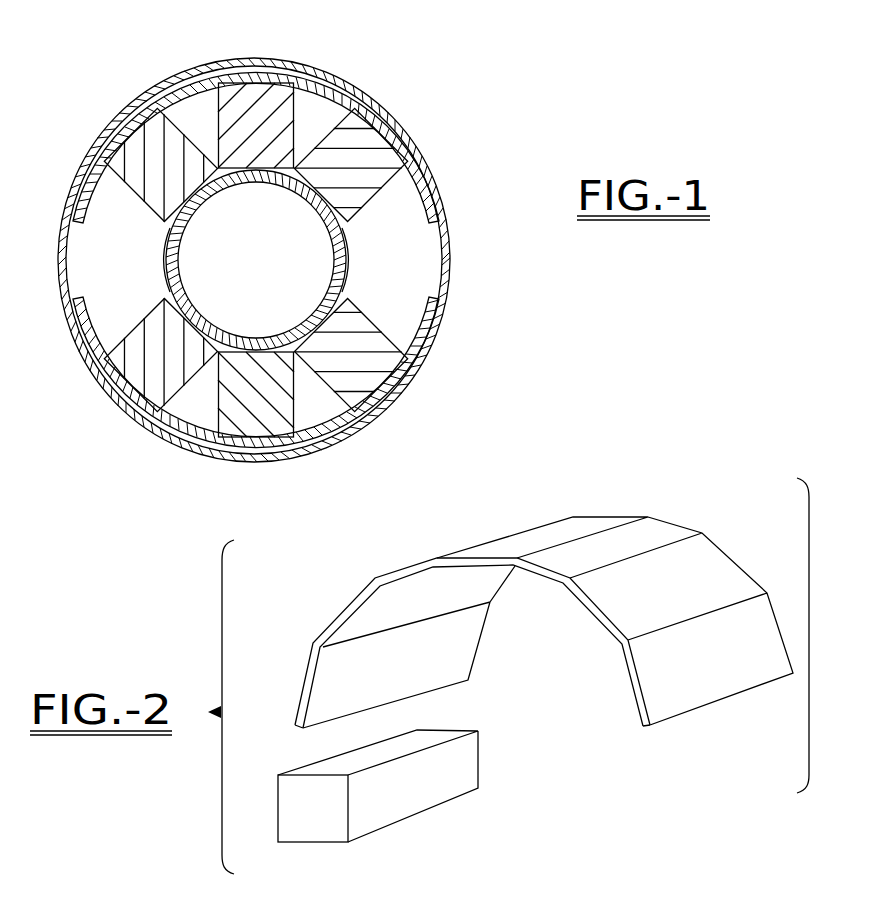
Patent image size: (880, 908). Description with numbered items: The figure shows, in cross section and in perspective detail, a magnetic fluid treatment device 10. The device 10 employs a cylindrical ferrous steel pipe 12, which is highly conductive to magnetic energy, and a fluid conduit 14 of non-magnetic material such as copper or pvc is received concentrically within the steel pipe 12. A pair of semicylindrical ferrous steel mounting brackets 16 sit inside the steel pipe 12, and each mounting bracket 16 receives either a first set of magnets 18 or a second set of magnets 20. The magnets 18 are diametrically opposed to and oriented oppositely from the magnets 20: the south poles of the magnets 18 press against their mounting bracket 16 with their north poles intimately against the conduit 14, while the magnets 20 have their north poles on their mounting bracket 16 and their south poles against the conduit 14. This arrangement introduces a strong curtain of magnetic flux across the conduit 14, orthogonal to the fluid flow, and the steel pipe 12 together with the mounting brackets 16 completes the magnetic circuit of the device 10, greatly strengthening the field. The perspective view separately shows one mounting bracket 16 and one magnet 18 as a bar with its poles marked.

In FIG. 1, the magnetic fluid treatment device 10 is at (456, 284).
In FIG. 1, the ferrous steel pipe 12 is at (312, 73).
In FIG. 1, the fluid conduit 14 is at (343, 262).
In FIG. 1, the mounting bracket 16 is at (178, 86).
In FIG. 2, the mounting bracket 16 is at (597, 518).
In FIG. 1, the first set of magnets 18 is at (240, 100).
In FIG. 2, the first set of magnets 18 is at (478, 755).
In FIG. 1, the second set of magnets 20 is at (123, 365).